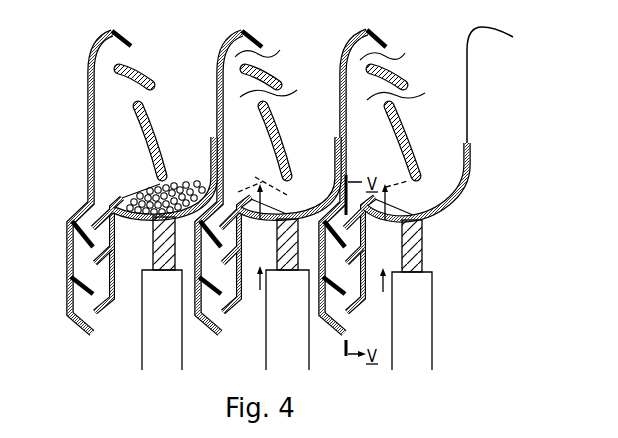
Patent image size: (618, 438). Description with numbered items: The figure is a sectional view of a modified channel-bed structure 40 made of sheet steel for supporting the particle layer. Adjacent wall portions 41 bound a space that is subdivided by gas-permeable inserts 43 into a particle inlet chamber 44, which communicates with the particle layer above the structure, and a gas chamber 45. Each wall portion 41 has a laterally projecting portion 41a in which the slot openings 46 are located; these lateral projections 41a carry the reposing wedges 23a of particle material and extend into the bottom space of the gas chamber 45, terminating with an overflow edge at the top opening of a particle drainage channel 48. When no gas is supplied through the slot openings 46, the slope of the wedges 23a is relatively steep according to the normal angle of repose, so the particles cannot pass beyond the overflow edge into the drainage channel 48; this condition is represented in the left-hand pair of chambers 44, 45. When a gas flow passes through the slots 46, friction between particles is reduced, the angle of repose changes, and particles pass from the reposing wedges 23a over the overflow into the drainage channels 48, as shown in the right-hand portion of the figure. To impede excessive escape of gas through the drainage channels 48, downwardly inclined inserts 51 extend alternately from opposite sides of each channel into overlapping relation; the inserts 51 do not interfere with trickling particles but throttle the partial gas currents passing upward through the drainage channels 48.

The channel-bed structure 40 is at (89, 43).
The wall portion 41 is at (217, 122).
The laterally projecting portion 41a is at (288, 222).
The gas-permeable insert 43 is at (143, 78).
The particle inlet chamber 44 is at (313, 123).
The gas chamber 45 is at (247, 156).
The slot opening 46 is at (145, 213).
The particle drainage channel 48 is at (78, 292).
The downwardly inclined insert 51 is at (67, 240).
The reposing wedge 23a is at (152, 220).